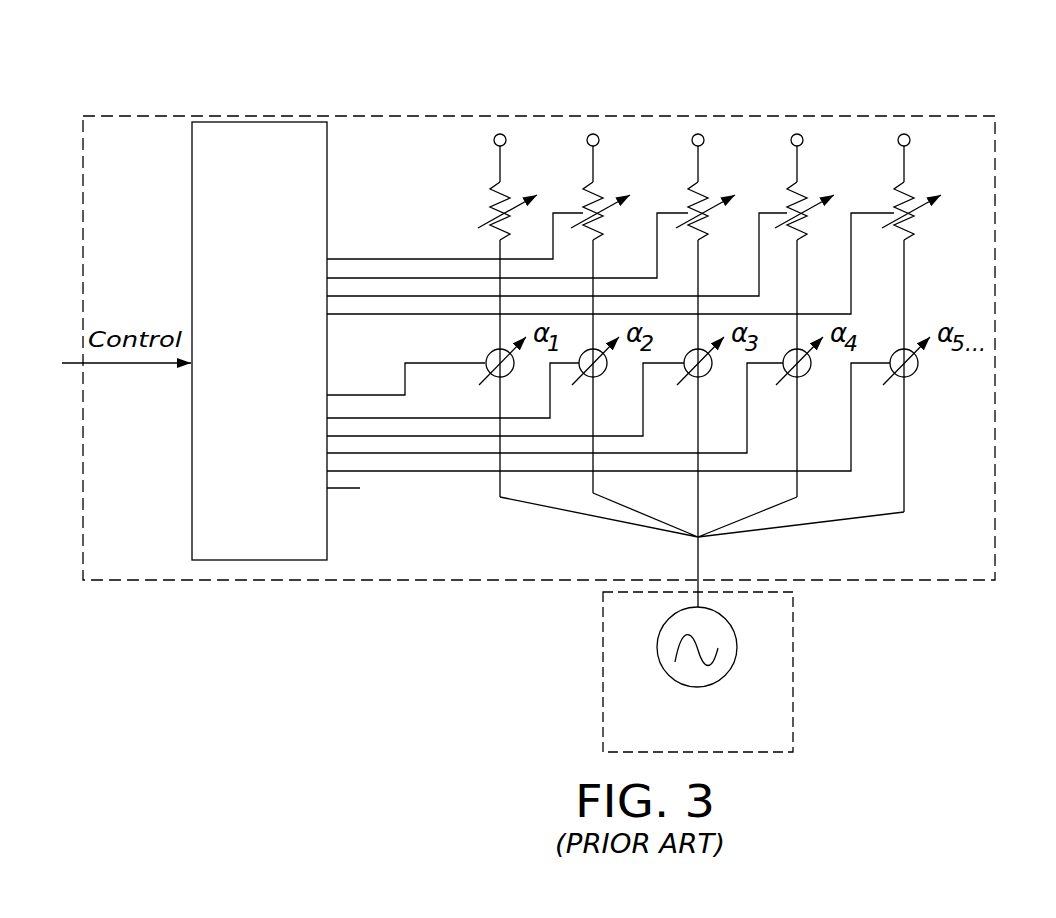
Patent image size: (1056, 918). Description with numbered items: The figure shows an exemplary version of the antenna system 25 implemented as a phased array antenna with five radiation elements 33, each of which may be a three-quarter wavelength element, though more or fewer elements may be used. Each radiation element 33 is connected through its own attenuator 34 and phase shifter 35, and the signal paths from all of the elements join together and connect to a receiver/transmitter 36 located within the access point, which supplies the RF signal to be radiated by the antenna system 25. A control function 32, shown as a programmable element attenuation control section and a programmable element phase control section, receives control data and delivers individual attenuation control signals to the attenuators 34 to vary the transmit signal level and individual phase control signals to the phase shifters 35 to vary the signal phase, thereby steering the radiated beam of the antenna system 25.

The antenna system 25 is at (893, 116).
The control function 32 is at (327, 170).
The radiation elements 33 is at (500, 170).
The attenuators 34 is at (490, 203).
The phase shifters 35 is at (485, 355).
The receiver/transmitter 36 is at (793, 655).